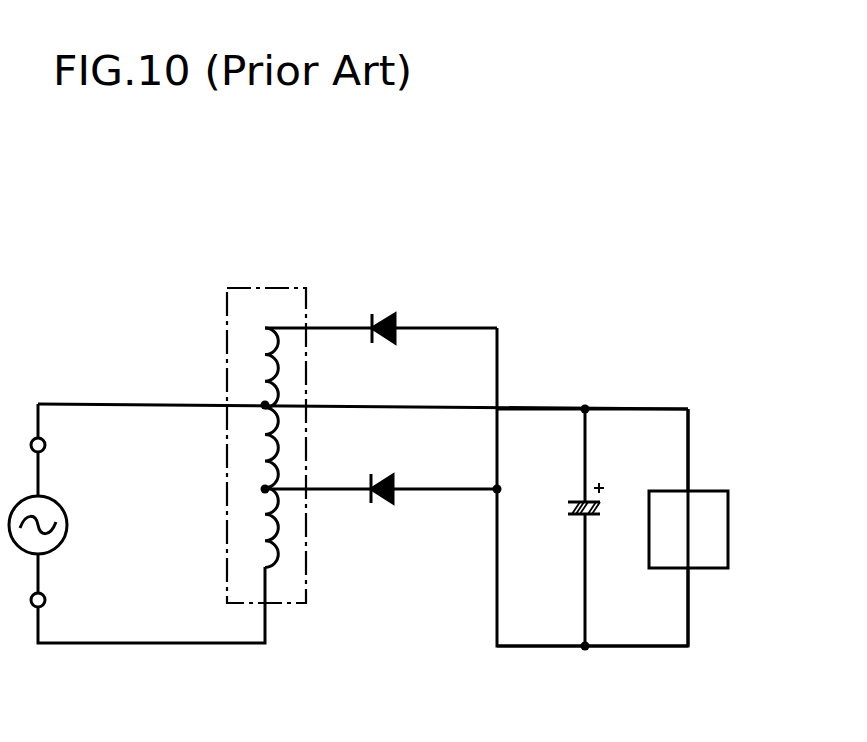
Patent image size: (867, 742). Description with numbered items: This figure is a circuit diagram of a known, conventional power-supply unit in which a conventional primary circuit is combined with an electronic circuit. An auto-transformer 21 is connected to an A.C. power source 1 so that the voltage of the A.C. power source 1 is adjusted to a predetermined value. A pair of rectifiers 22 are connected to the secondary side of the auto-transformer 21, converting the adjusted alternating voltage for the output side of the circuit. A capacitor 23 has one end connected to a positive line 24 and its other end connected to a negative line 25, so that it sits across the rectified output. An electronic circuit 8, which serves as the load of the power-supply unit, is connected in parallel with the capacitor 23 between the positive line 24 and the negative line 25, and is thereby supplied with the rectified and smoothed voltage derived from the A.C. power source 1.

The A.C. power source 1 is at (67, 522).
The auto-transformer 21 is at (277, 288).
The rectifiers 22 is at (382, 325).
The capacitor 23 is at (577, 501).
The positive line 24 is at (553, 407).
The negative line 25 is at (548, 648).
The electronic circuit 8 is at (729, 525).